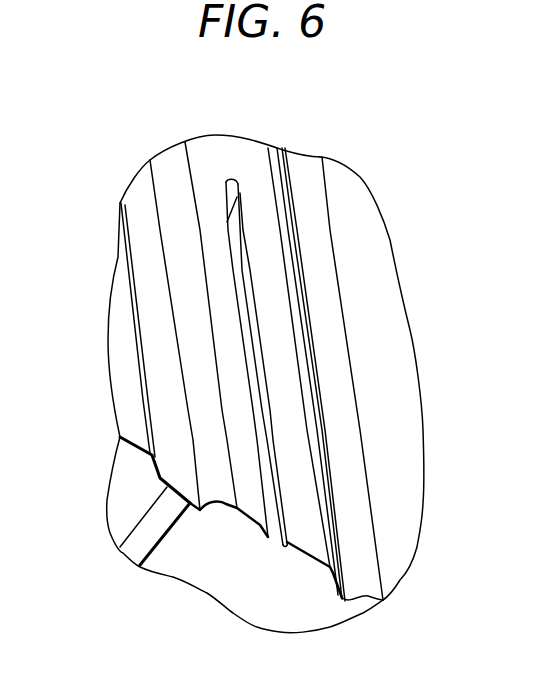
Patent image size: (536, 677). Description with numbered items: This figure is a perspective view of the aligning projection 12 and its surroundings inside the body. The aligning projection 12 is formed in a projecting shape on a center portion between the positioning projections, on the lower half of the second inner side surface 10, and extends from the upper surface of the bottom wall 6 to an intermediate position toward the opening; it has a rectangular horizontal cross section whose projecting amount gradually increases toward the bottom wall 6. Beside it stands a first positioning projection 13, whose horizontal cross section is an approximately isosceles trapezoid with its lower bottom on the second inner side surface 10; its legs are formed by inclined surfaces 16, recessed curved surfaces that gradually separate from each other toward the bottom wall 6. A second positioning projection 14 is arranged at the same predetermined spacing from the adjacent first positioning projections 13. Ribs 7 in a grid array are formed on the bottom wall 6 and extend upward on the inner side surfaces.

The bottom wall 6 is at (220, 572).
The ribs 7 is at (142, 533).
The second inner side surface 10 is at (238, 157).
The aligning projection 12 is at (250, 378).
The first positioning projection 13 is at (287, 167).
The second positioning projection 14 is at (162, 170).
The inclined surfaces 16 is at (322, 257).